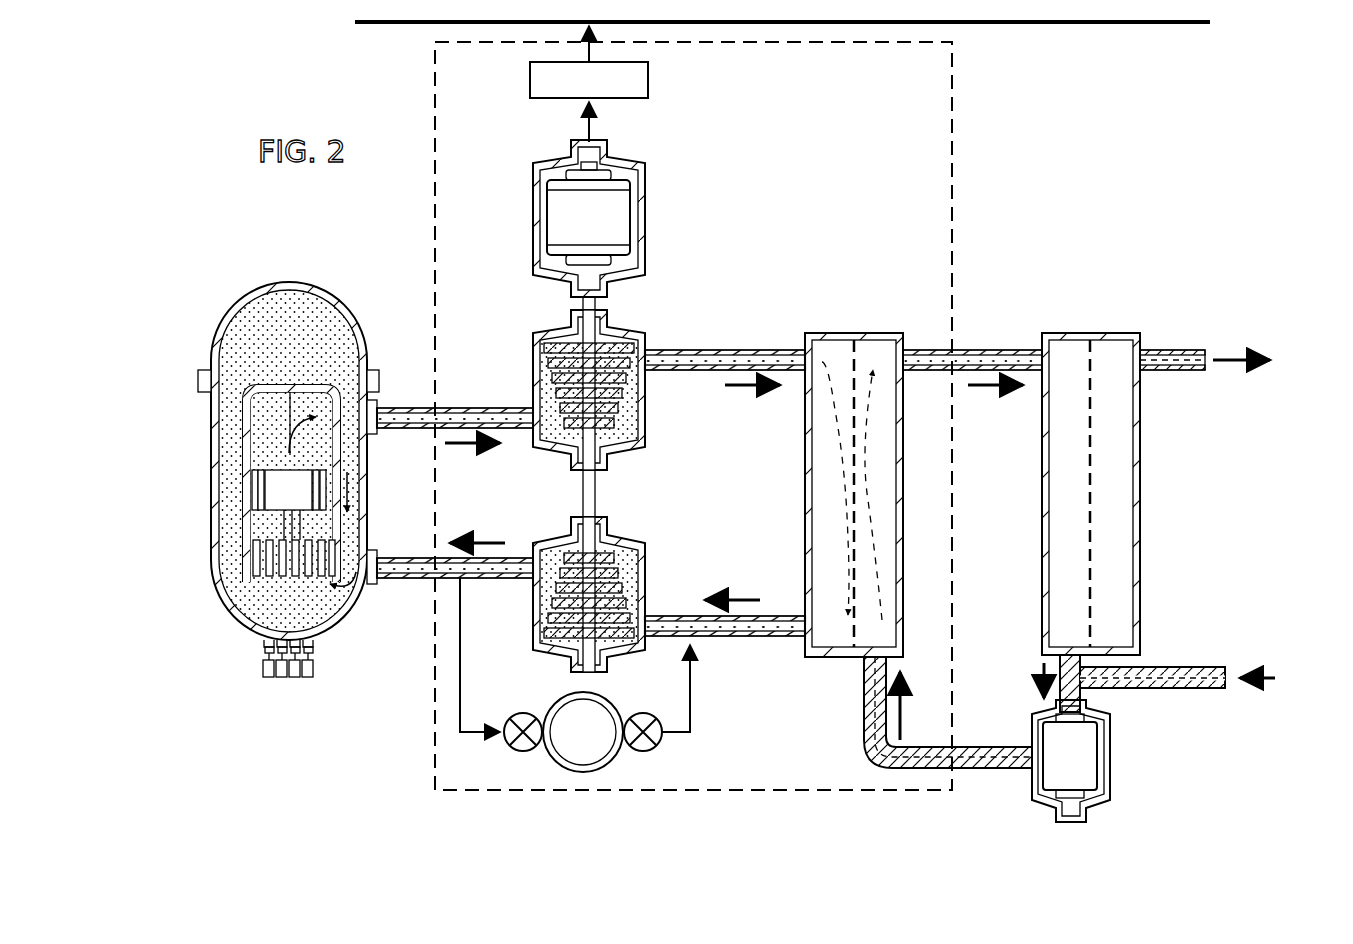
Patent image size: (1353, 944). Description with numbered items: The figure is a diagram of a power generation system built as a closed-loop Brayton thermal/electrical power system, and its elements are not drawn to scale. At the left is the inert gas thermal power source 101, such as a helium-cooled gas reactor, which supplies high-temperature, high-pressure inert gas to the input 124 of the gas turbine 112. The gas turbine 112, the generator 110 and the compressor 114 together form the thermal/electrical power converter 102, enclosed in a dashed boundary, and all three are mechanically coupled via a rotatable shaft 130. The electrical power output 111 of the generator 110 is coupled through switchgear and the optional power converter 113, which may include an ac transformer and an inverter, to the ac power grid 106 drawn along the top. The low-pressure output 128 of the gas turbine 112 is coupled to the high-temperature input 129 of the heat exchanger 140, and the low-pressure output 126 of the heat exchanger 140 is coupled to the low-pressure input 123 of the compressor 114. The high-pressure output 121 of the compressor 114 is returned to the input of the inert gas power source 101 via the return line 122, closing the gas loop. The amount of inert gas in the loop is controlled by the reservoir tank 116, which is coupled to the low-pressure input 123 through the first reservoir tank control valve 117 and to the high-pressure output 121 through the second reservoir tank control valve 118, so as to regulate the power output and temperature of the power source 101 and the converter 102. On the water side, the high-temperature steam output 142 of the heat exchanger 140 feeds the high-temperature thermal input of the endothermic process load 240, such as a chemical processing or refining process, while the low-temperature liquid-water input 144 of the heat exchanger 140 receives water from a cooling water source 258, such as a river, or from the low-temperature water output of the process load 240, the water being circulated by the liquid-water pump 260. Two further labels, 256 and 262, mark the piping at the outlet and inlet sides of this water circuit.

The inert gas thermal power source 101 is at (300, 282).
The thermal/electrical power converter 102 is at (433, 262).
The power grid 106 is at (402, 26).
The generator 110 is at (532, 220).
The electrical power output 111 is at (584, 130).
The gas turbine 112 is at (647, 382).
The power converter 113 is at (528, 80).
The compressor 114 is at (552, 532).
The reservoir tank 116 is at (612, 760).
The first reservoir tank control valve 117 is at (650, 712).
The second reservoir tank control valve 118 is at (522, 712).
The high-pressure output 121 is at (532, 605).
The return line 122 is at (384, 594).
The low-pressure input 123 is at (652, 605).
The input 124 is at (528, 392).
The low-pressure output 126 is at (803, 658).
The low-pressure output 128 is at (660, 334).
The high-temperature input 129 is at (795, 333).
The rotatable shaft 130 is at (598, 488).
The heat exchanger 140 is at (850, 333).
The high-temperature steam output 142 is at (912, 333).
The low-temperature liquid-water input 144 is at (860, 664).
The endothermic process load 240 is at (1106, 333).
The coolant outlet pipe 256 is at (1186, 350).
The cooling water source 258 is at (1188, 690).
The liquid-water pump 260 is at (1110, 768).
The cooler outlet pipe 262 is at (1096, 692).